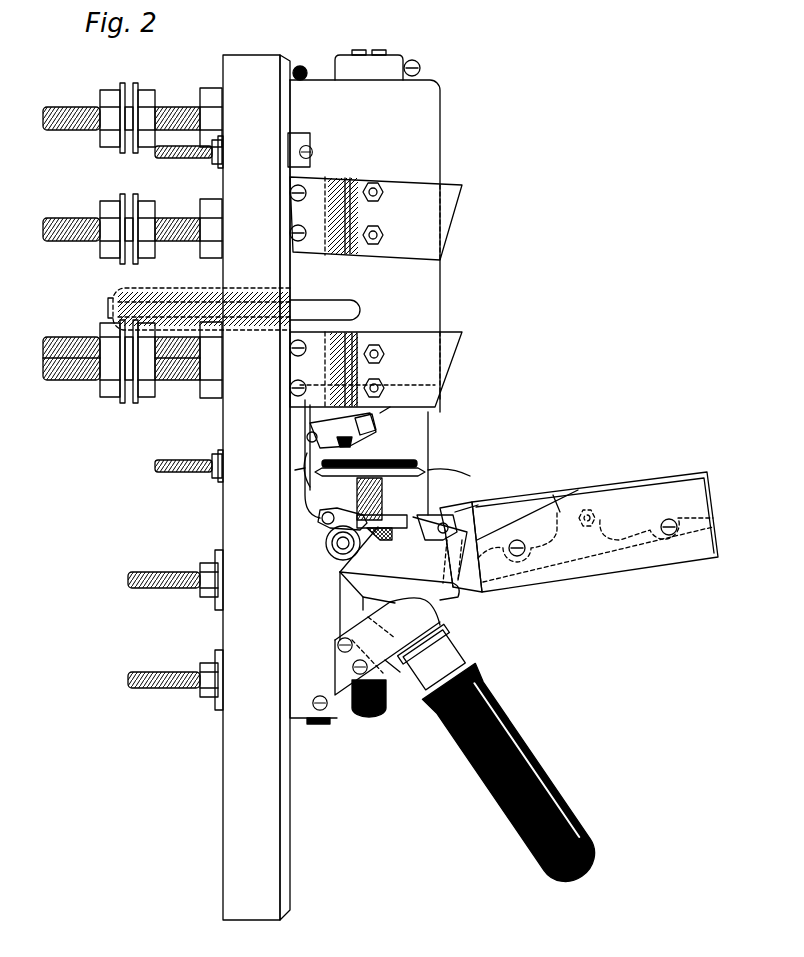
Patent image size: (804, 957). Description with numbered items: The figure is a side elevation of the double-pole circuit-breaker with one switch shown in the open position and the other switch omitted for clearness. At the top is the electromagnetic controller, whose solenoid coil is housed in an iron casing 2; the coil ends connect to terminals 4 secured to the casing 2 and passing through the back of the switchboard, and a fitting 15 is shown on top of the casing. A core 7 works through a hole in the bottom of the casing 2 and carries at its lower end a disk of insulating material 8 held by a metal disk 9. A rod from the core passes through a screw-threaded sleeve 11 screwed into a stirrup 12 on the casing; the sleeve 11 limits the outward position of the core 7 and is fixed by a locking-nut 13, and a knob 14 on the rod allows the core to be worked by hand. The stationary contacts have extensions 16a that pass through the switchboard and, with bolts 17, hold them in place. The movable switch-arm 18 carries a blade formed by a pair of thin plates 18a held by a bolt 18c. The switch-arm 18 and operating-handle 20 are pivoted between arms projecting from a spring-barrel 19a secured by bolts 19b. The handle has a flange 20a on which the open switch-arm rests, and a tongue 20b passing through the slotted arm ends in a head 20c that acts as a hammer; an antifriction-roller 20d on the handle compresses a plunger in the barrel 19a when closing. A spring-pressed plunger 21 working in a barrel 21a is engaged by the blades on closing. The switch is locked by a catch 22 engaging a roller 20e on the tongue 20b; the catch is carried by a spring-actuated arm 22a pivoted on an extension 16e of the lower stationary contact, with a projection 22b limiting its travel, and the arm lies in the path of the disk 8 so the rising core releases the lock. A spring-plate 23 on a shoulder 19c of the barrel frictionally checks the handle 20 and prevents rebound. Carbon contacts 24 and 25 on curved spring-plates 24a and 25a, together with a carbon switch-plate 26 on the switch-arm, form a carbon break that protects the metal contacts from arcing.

The iron casing 2 is at (376, 395).
The terminals 4 is at (180, 100).
The core 7 is at (380, 413).
The disk of insulating material 8 is at (417, 463).
The disk of metal 9 is at (430, 470).
The screw-threaded sleeve 11 is at (383, 496).
The stirrup 12 is at (520, 476).
The locking-nut 13 is at (380, 543).
The knob 14 is at (385, 745).
The terminal block 15 is at (385, 48).
The extensions 16a is at (192, 213).
The extension of the lower stationary contact member 16e is at (295, 472).
The bolts 17 is at (195, 178).
The switch-arm 18 is at (565, 604).
The plates 18a is at (563, 493).
The bolt 18c is at (590, 510).
The spring-barrel 19a is at (335, 620).
The bolts 19b is at (172, 608).
The shoulder 19c is at (383, 668).
The operating-handle 20 is at (515, 778).
The flange or shoulder 20a is at (457, 597).
The tongue 20b is at (423, 538).
The flange or head 20c is at (442, 515).
The antifriction-roller 20d is at (328, 508).
The roller 20e is at (478, 505).
The spring-pressed plunger 21 is at (347, 306).
The barrel 21a is at (120, 299).
The catch 22 is at (352, 450).
The spring-actuated arm 22a is at (377, 430).
The projection 22b is at (352, 451).
The spring-plate 23 is at (415, 628).
The carbon contact 24 is at (436, 220).
The curved spring-plate 24a is at (342, 185).
The carbon contact 25 is at (440, 368).
The curved spring-plate 25a is at (350, 338).
The carbon switch-plate 26 is at (703, 503).